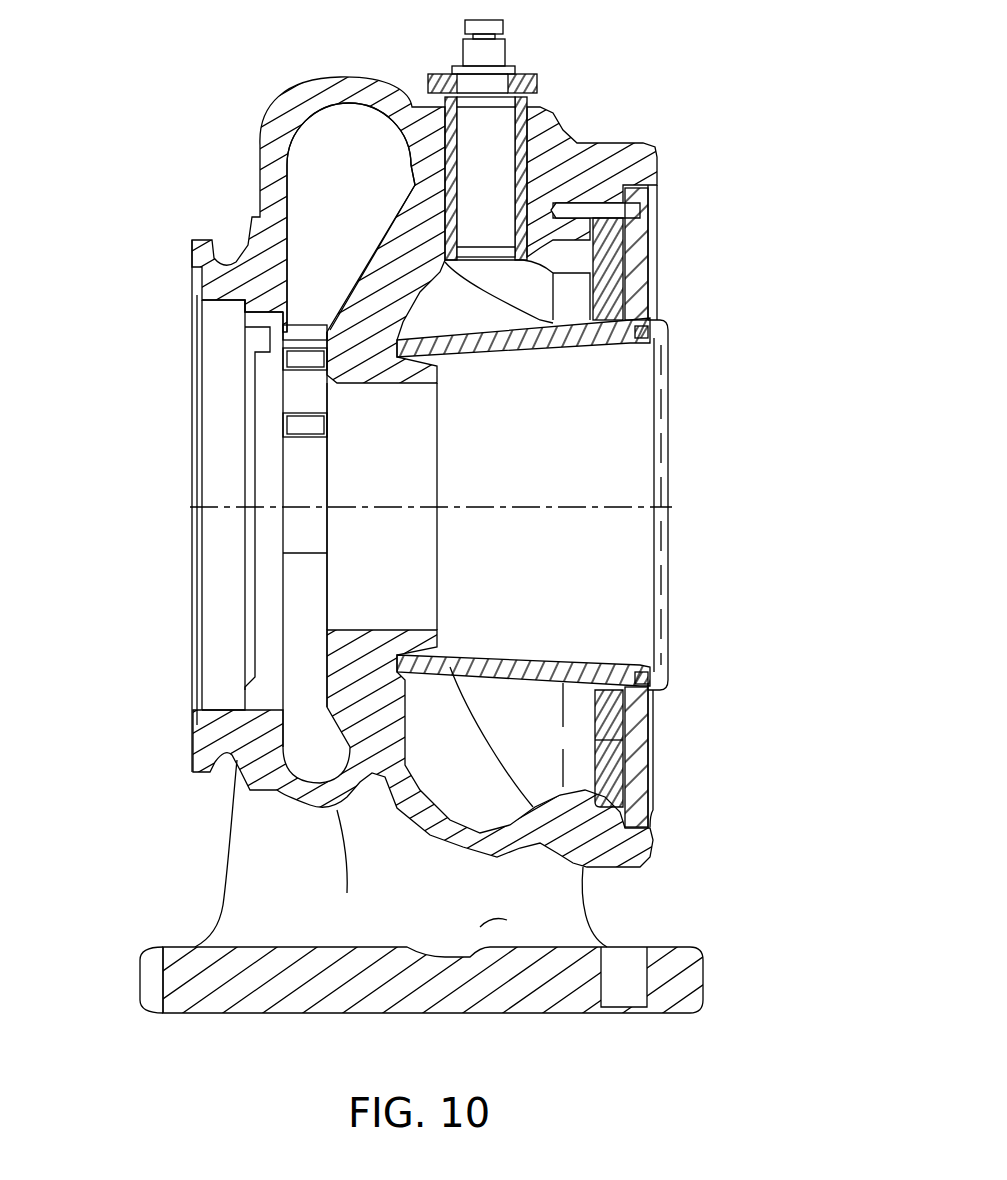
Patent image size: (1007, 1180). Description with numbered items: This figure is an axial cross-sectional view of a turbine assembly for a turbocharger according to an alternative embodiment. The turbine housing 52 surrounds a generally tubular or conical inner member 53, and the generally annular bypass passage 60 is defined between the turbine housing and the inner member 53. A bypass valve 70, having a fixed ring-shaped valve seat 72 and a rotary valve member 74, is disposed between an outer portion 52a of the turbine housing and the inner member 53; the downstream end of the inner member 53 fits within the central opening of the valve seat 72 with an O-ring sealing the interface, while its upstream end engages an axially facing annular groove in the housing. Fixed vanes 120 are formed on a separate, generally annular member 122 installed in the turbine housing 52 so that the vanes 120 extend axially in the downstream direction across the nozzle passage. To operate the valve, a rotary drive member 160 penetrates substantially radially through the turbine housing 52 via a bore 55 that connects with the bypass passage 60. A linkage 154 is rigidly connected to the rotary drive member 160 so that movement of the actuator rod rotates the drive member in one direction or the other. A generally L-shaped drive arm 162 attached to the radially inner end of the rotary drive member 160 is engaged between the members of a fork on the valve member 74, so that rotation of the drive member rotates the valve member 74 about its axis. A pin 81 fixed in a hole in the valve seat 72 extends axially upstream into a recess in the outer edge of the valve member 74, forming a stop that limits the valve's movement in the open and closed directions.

The turbine housing 52 is at (282, 128).
The outer portion of the turbine housing 52a is at (644, 170).
The bore 55 is at (443, 180).
The fixed vanes 120 is at (308, 332).
The annular member 122 is at (257, 345).
The linkage 154 is at (535, 80).
The rotary drive member 160 is at (518, 167).
The pin 81 is at (641, 210).
The valve seat 72 is at (645, 245).
The drive arm 162 is at (547, 303).
The inner member 53 is at (527, 660).
The bypass passage 60 is at (482, 763).
The valve member 74 is at (607, 777).
The bypass valve 70 is at (659, 812).